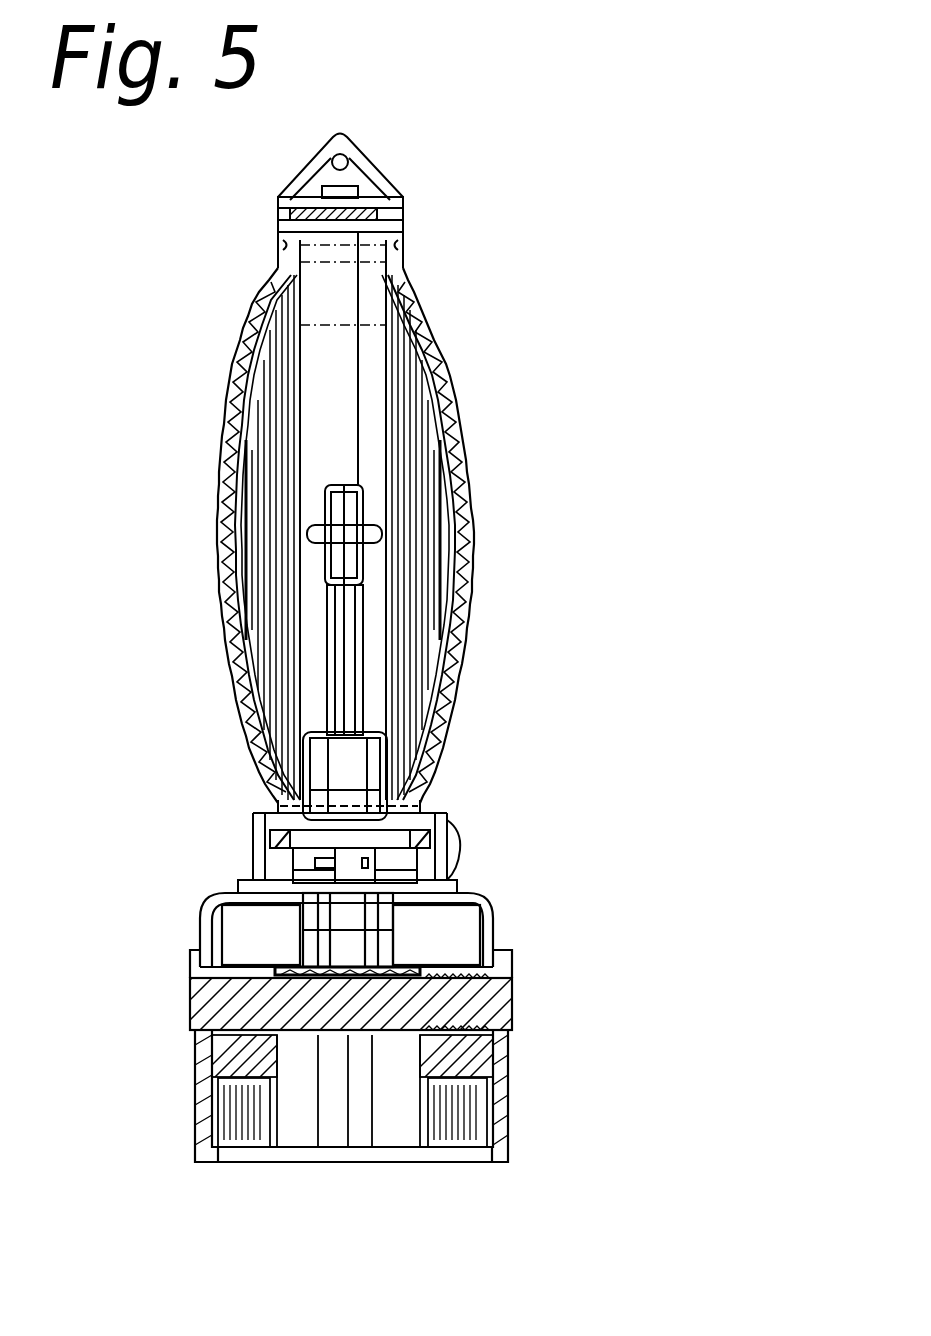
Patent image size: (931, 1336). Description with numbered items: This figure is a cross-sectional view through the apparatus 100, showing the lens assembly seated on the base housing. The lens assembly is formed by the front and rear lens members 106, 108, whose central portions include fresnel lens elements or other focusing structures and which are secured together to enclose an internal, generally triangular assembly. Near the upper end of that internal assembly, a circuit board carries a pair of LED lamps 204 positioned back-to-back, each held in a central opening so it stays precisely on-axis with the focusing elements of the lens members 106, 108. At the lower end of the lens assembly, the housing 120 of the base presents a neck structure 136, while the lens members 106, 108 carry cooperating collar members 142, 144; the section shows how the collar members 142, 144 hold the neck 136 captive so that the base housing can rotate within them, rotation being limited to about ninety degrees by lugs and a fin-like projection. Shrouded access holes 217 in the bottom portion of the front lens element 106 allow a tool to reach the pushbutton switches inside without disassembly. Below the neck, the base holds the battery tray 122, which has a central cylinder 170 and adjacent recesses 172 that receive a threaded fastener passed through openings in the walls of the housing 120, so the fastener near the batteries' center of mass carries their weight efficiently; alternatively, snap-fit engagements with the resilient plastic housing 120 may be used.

The apparatus 100 is at (410, 106).
The rear lens member 108 is at (240, 373).
The front lens member 106 is at (472, 560).
The LED lamps 204 is at (317, 533).
The access holes 217 is at (423, 800).
The neck structure 136 is at (433, 807).
The collar member 142 is at (437, 832).
The collar member 144 is at (253, 847).
The housing 120 is at (483, 907).
The central cylinder 170 is at (318, 968).
The recesses 172 is at (217, 1020).
The battery tray 122 is at (408, 1140).